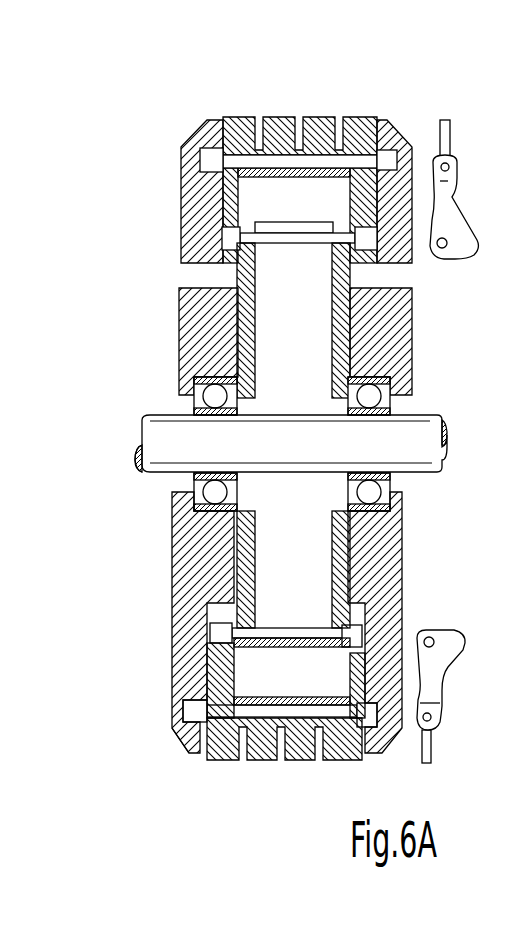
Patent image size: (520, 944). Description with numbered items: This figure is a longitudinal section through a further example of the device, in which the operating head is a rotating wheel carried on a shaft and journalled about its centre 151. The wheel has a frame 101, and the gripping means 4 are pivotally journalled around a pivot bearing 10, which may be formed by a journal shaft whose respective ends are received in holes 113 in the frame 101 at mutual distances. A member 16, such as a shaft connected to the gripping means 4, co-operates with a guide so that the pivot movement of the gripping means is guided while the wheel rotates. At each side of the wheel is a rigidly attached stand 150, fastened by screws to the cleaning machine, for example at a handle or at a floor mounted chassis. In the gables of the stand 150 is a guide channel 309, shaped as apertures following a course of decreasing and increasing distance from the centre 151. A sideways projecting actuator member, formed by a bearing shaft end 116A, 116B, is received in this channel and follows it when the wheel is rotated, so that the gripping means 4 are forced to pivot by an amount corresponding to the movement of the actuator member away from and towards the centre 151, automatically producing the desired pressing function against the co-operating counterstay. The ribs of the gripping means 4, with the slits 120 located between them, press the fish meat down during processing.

The gripping means 4 is at (448, 133).
The pivot bearing 10 is at (197, 651).
The member 16 is at (318, 158).
The frame 101 is at (333, 563).
The holes 113 is at (181, 210).
The bearing shaft end 116A is at (171, 733).
The bearing shaft end 116B is at (419, 633).
The slits 120 is at (240, 762).
The stand 150 is at (207, 120).
The centre of the wheel 151 is at (417, 428).
The guide channel 309 is at (200, 163).